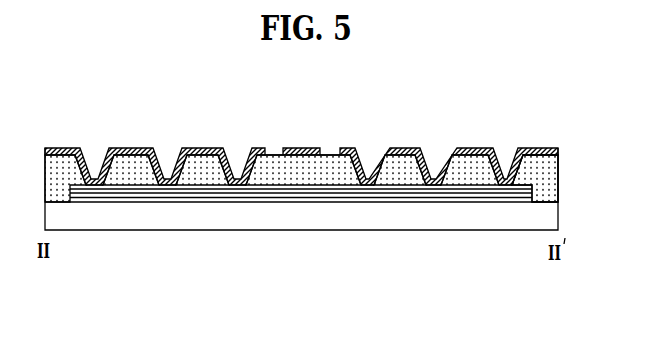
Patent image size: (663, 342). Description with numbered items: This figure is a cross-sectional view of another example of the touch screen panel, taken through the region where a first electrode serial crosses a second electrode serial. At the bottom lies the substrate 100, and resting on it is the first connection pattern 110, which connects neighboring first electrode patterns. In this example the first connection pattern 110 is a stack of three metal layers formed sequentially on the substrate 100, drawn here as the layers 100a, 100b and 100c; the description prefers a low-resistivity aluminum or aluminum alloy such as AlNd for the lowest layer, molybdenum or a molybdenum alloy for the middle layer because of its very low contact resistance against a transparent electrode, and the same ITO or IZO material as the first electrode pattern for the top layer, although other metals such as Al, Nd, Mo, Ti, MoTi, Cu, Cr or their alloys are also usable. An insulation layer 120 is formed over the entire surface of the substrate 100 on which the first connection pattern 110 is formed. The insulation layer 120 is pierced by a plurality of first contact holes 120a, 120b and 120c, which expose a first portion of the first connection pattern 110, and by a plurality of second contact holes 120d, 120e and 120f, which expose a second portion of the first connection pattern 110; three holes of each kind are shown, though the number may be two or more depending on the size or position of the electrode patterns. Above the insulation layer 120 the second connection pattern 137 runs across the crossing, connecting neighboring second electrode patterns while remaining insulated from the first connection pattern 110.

The substrate 100 is at (233, 220).
The first layer of substrate stack 100a is at (478, 288).
The second layer of substrate stack 100b is at (402, 195).
The third layer of substrate stack 100c is at (467, 190).
The first connection pattern 110 is at (301, 257).
The insulation layer 120 is at (298, 139).
The first contact hole 120a is at (358, 149).
The first contact hole 120b is at (430, 149).
The first contact hole 120c is at (500, 149).
The second contact hole 120d is at (231, 149).
The second contact hole 120e is at (160, 149).
The second contact hole 120f is at (90, 149).
The second connection pattern 137 is at (313, 148).